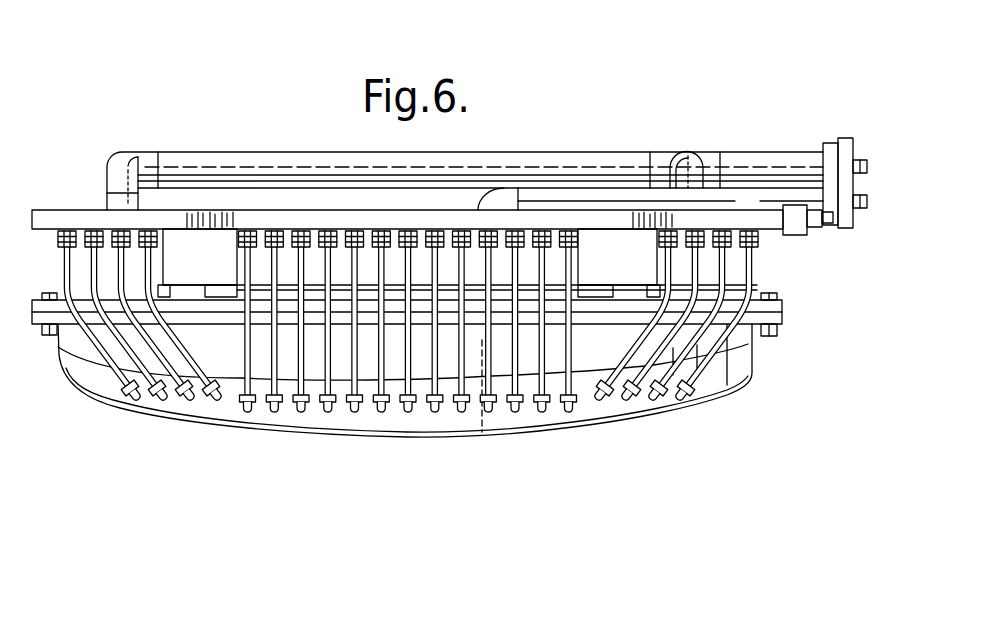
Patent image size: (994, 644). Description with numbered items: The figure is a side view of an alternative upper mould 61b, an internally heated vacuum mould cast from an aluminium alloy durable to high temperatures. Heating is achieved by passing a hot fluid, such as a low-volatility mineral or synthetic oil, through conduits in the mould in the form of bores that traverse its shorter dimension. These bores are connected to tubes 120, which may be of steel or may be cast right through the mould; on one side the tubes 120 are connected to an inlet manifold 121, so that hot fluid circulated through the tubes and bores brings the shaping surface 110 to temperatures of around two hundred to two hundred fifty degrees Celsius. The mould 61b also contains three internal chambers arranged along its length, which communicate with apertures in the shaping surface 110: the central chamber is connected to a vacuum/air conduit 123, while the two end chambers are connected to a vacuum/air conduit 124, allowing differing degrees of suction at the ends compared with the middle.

The shaping surface 110 is at (376, 452).
The upper mould 61b is at (532, 462).
The tubes 120 is at (572, 347).
The inlet manifold 121 is at (253, 217).
The vacuum/air conduit 123 is at (604, 192).
The vacuum/air conduit 124 is at (763, 163).